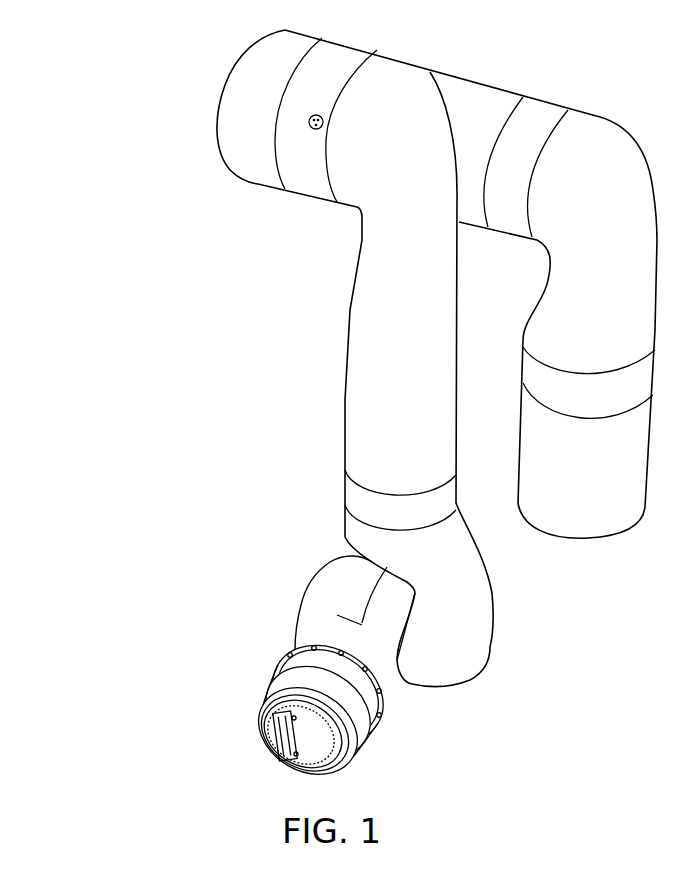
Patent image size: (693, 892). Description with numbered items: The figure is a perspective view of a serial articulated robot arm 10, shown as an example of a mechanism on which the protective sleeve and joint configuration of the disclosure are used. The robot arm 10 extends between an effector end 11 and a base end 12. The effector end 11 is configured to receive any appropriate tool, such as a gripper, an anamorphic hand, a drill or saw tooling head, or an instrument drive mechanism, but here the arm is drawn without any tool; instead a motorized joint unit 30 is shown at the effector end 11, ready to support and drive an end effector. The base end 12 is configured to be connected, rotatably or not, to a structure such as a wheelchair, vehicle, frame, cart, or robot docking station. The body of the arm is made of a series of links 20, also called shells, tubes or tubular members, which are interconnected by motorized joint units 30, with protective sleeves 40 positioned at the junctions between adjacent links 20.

The robot arm 10 is at (126, 299).
The effector end 11 is at (256, 682).
The base end 12 is at (581, 557).
The link 20 is at (468, 98).
The motorized joint unit 30 is at (357, 737).
The protective sleeve 40 is at (357, 48).